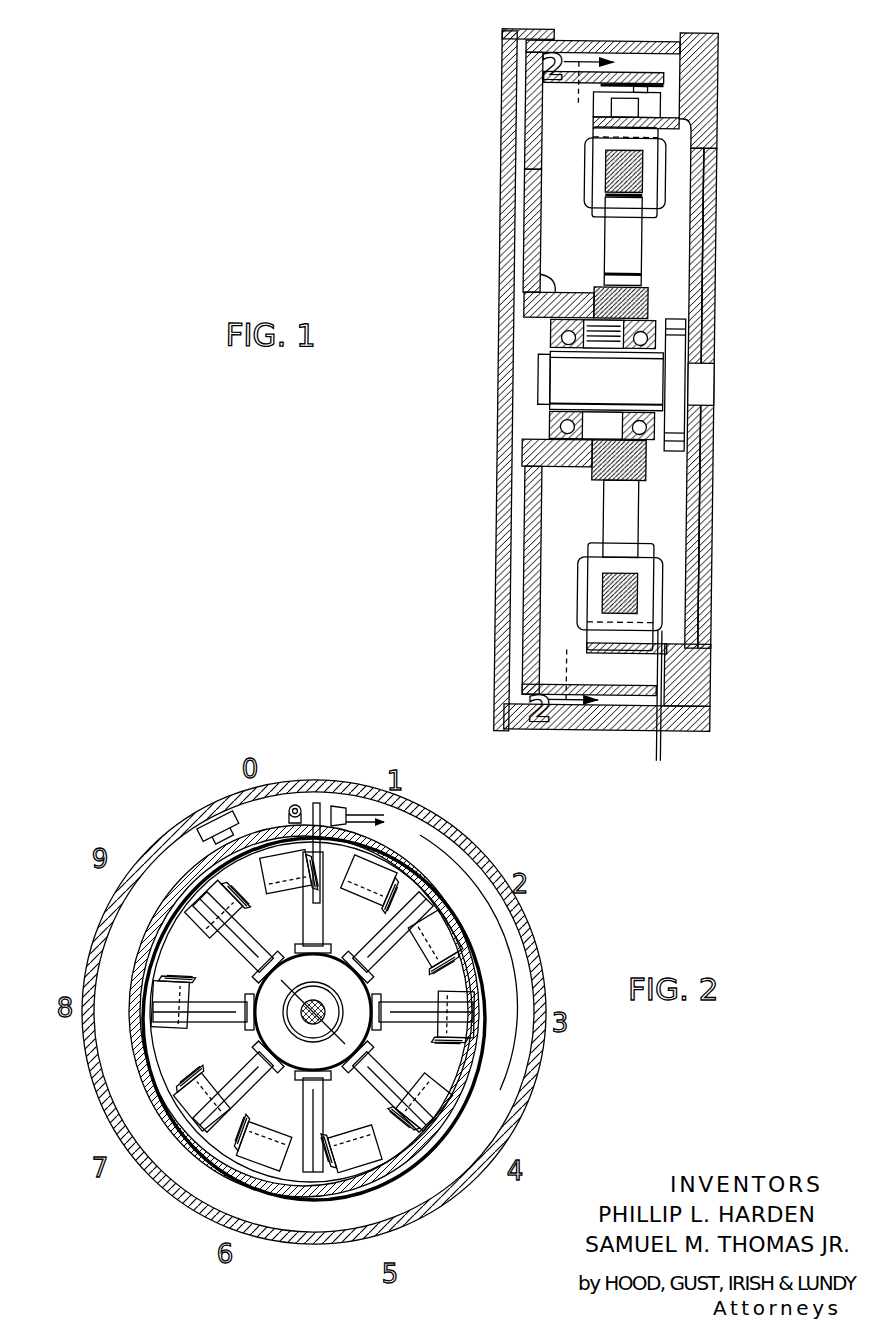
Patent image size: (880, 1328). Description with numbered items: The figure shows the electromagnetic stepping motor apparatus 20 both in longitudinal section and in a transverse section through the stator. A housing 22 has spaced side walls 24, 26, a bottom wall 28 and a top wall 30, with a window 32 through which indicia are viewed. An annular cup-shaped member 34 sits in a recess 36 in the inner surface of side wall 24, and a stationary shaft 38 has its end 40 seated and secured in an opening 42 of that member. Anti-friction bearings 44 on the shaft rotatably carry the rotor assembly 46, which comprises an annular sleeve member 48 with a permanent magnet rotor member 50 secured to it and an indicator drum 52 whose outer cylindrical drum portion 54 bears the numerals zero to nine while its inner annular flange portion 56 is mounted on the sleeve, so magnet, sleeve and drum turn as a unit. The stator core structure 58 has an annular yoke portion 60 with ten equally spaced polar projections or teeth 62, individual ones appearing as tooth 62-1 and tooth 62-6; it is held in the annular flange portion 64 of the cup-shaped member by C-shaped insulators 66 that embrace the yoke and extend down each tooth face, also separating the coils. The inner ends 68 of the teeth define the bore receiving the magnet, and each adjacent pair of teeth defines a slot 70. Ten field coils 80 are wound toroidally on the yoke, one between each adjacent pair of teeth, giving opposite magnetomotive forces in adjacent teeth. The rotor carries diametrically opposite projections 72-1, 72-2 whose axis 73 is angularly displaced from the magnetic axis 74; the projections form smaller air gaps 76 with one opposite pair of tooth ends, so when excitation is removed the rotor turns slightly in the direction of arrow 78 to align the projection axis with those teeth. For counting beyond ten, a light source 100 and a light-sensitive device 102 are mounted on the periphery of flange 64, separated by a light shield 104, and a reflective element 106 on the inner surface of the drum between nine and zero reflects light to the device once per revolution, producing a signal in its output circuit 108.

In FIG. 1, the stepping motor apparatus 20 is at (771, 199).
In FIG. 2, the stepping motor apparatus 20 is at (558, 924).
In FIG. 1, the housing 22 is at (719, 150).
In FIG. 1, the side wall 24 is at (708, 625).
In FIG. 1, the side wall 26 is at (505, 500).
In FIG. 1, the bottom wall 28 is at (588, 732).
In FIG. 1, the top wall 30 is at (515, 32).
In FIG. 1, the window 32 is at (577, 45).
In FIG. 1, the annular cup-shaped member 34 is at (696, 540).
In FIG. 1, the recess 36 is at (701, 467).
In FIG. 1, the stationary shaft 38 is at (560, 385).
In FIG. 2, the stationary shaft 38 is at (316, 999).
In FIG. 1, the shaft end 40 is at (690, 370).
In FIG. 1, the opening 42 is at (705, 407).
In FIG. 1, the anti-friction bearings 44 is at (555, 330).
In FIG. 1, the rotor assembly 46 is at (540, 268).
In FIG. 1, the annular sleeve member 48 is at (540, 302).
In FIG. 1, the permanent magnet rotor member 50 is at (647, 300).
In FIG. 2, the permanent magnet rotor member 50 is at (258, 1006).
In FIG. 1, the indicator drum 52 is at (538, 160).
In FIG. 1, the outer cylindrical drum portion 54 is at (637, 82).
In FIG. 2, the outer cylindrical drum portion 54 is at (472, 880).
In FIG. 1, the inner annular flange portion 56 is at (560, 290).
In FIG. 2, the stator core structure 58 is at (507, 1035).
In FIG. 1, the annular yoke portion 60 is at (605, 590).
In FIG. 2, the annular yoke portion 60 is at (242, 1156).
In FIG. 1, the polar projections or teeth 62 is at (620, 520).
In FIG. 2, the polar projections or teeth 62 is at (466, 1012).
In FIG. 2, the tooth 62-1 is at (200, 903).
In FIG. 2, the tooth 62-6 is at (358, 1170).
In FIG. 1, the annular flange portion 64 is at (631, 655).
In FIG. 2, the annular flange portion 64 is at (188, 1104).
In FIG. 1, the C-shaped insulators 66 is at (595, 637).
In FIG. 2, the C-shaped insulators 66 is at (443, 1097).
In FIG. 2, the inner ends of teeth 68 is at (397, 865).
In FIG. 2, the slot 70 is at (372, 944).
In FIG. 2, the projection 72-1 is at (212, 868).
In FIG. 2, the projection 72-2 is at (436, 1148).
In FIG. 2, the axis of projections 73 is at (338, 1051).
In FIG. 2, the magnetic axis 74 is at (343, 1012).
In FIG. 2, the smaller air gaps 76 is at (264, 948).
In FIG. 2, the arrow 78 is at (264, 1053).
In FIG. 2, the field coils 80 is at (472, 1064).
In FIG. 2, the light source 100 is at (294, 805).
In FIG. 1, the light-sensitive device 102 is at (620, 107).
In FIG. 2, the light-sensitive device 102 is at (340, 806).
In FIG. 1, the light shield 104 is at (592, 110).
In FIG. 2, the light shield 104 is at (316, 803).
In FIG. 1, the reflective element 106 is at (640, 95).
In FIG. 2, the reflective element 106 is at (200, 823).
In FIG. 2, the output circuit 108 is at (388, 818).